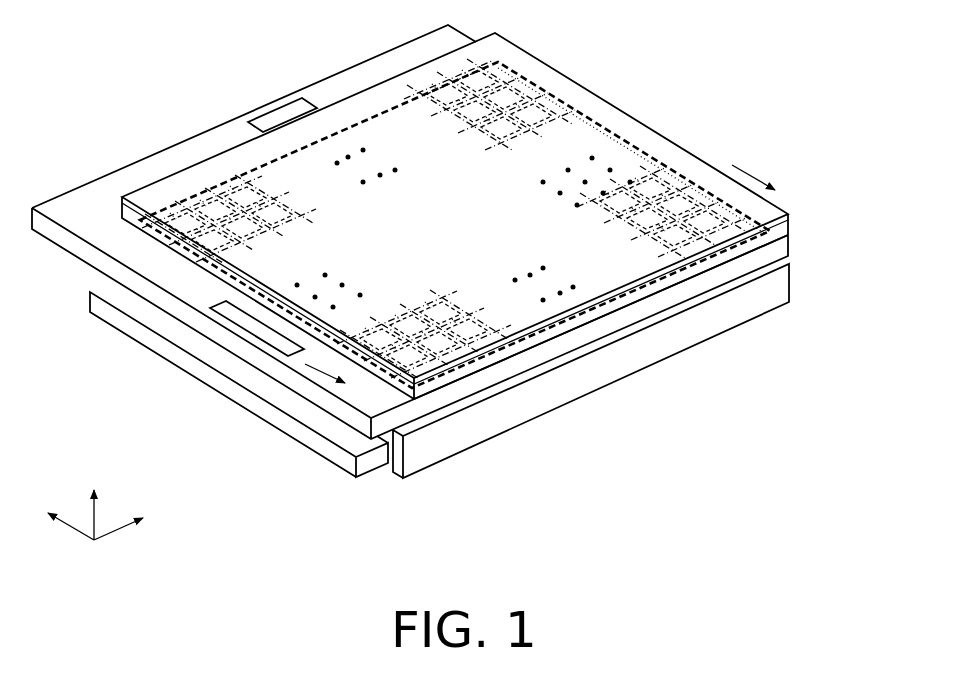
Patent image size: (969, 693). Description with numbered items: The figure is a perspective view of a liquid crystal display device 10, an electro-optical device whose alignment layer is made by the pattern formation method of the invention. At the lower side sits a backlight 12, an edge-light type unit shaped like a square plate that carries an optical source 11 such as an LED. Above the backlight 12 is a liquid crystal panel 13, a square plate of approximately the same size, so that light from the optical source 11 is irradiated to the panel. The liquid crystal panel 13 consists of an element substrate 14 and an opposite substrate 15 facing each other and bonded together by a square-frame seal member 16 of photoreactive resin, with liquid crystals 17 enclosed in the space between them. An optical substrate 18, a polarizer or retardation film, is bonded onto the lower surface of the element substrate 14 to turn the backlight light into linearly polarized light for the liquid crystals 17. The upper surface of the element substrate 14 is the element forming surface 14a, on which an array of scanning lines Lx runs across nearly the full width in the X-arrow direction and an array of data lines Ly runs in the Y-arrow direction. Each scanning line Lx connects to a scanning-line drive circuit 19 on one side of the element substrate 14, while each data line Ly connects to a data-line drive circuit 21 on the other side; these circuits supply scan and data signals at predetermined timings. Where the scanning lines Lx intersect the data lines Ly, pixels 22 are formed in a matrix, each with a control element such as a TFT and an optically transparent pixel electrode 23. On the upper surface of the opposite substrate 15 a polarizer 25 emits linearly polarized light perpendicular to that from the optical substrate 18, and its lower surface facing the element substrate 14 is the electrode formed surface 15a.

The liquid crystal display device 10 is at (118, 128).
The optical source 11 is at (385, 463).
The backlight 12 is at (455, 448).
The liquid crystal panel 13 is at (464, 221).
The element substrate 14 is at (439, 232).
The element forming surface 14a is at (107, 237).
The opposite substrate 15 is at (478, 201).
The electrode formed surface 15a is at (173, 258).
The seal member 16 is at (662, 158).
The liquid crystals 17 is at (622, 140).
The optical substrate 18 is at (765, 277).
The scanning-line drive circuit 19 is at (228, 297).
The data-line drive circuit 21 is at (283, 118).
The pixels 22 is at (506, 120).
The pixel electrode 23 is at (452, 122).
The polarizer 25 is at (522, 57).
The scanning lines Lx is at (460, 135).
The data lines Ly is at (535, 128).